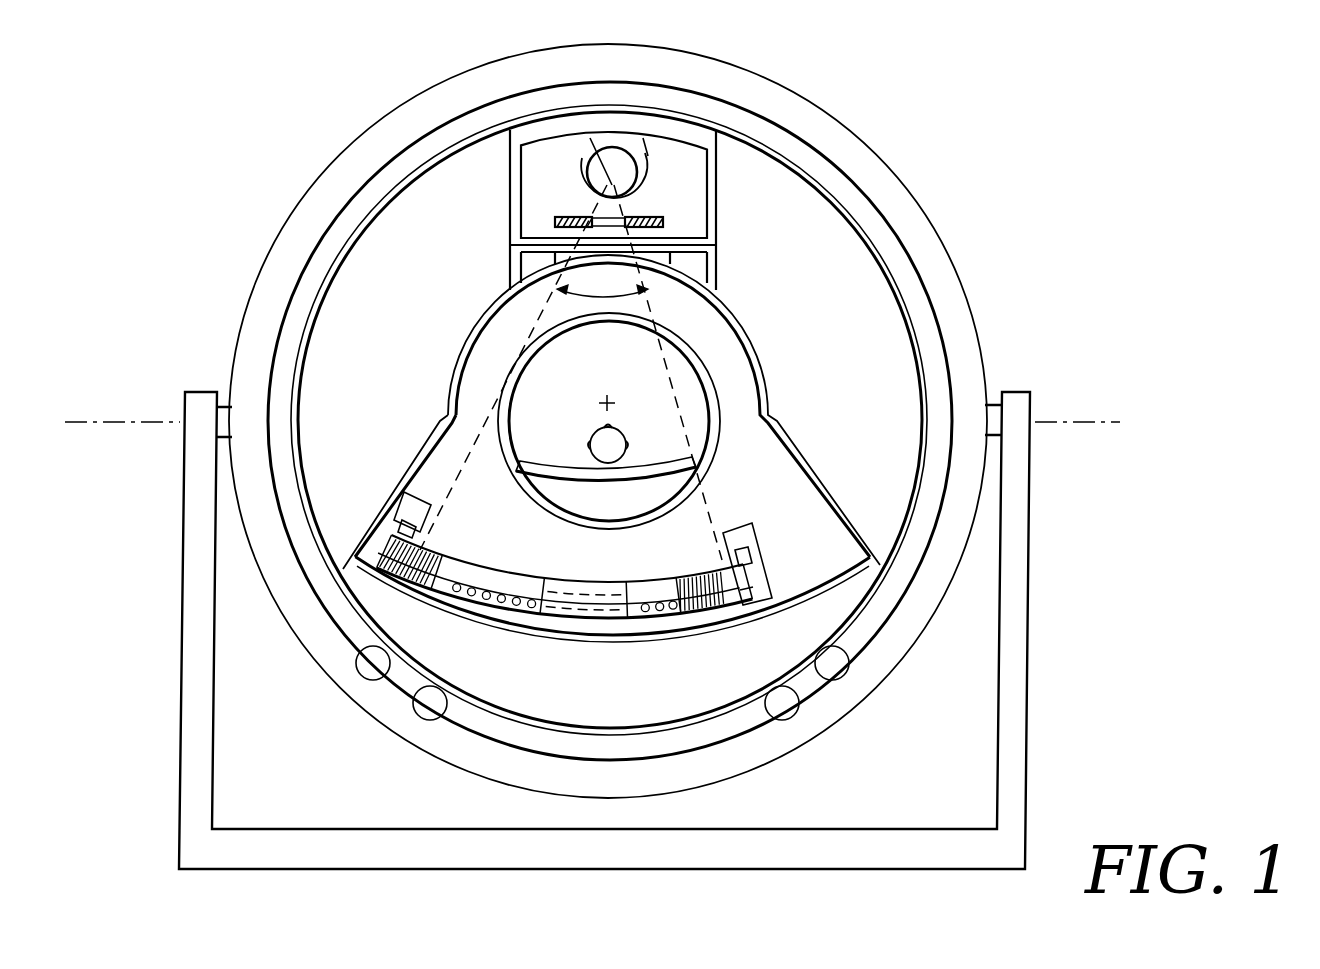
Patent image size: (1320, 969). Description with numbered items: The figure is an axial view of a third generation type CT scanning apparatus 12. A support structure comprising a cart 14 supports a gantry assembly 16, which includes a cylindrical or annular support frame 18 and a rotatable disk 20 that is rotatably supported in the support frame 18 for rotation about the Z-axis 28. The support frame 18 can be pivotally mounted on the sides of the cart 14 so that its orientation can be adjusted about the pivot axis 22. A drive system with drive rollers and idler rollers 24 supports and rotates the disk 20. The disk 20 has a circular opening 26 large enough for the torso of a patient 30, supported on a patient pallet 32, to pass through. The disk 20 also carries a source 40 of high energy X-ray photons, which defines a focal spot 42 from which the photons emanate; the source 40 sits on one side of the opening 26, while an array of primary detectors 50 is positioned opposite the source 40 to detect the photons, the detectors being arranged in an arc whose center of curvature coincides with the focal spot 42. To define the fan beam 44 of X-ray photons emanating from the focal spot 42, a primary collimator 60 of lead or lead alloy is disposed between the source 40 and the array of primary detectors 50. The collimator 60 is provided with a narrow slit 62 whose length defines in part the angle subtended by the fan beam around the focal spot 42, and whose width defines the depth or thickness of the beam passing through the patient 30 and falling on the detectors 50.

The CT scanning apparatus 12 is at (627, 421).
The cart 14 is at (1032, 482).
The gantry assembly 16 is at (957, 260).
The support frame 18 is at (843, 147).
The rotatable disk 20 is at (850, 207).
The pivot axis 22 is at (1096, 414).
The drive rollers and idler rollers 24 is at (419, 694).
The circular opening 26 is at (736, 350).
The Z-axis 28 is at (611, 400).
The patient 30 is at (596, 436).
The patient pallet 32 is at (650, 460).
The source 40 is at (643, 190).
The focal spot 42 is at (612, 185).
The fan beam 44 is at (656, 317).
The array of primary detectors 50 is at (622, 626).
The primary collimator 60 is at (655, 217).
The slit 62 is at (592, 218).